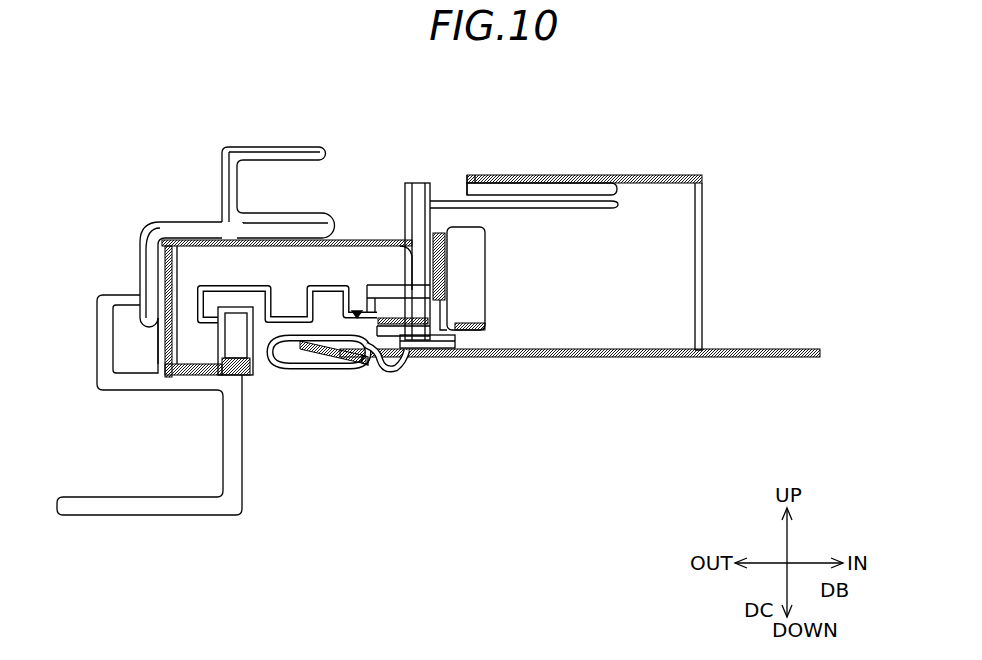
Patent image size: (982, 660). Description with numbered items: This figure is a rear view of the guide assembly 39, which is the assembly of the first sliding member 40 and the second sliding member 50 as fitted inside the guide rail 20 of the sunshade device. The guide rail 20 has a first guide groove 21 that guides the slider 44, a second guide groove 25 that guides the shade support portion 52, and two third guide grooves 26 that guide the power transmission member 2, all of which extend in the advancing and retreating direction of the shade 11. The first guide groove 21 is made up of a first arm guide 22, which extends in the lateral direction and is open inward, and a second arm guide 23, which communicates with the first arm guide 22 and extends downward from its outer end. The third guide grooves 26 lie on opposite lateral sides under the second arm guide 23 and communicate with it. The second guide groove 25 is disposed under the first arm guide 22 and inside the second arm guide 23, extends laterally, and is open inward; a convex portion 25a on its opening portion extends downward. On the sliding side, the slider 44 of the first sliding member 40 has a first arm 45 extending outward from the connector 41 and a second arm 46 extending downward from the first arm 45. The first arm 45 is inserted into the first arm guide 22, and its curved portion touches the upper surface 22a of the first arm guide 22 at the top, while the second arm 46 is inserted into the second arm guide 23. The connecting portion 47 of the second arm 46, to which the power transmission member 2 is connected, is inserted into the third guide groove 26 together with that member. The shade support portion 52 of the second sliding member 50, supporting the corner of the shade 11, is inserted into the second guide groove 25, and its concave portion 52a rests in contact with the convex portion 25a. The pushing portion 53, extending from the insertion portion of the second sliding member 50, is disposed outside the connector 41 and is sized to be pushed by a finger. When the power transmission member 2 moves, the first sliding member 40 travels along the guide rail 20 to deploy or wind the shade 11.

The power transmission member 2 is at (321, 354).
The shade 11 is at (582, 358).
The guide rail 20 is at (236, 120).
The first guide groove 21 is at (203, 171).
The first arm guide 22 is at (203, 253).
The upper surface of the first arm guide 22a is at (273, 247).
The second arm guide 23 is at (165, 270).
The second guide groove 25 is at (305, 347).
The convex portion 25a is at (383, 356).
The third guide groove 26 is at (131, 391).
The guide assembly 39 is at (676, 127).
The first sliding member 40 is at (710, 222).
The connector 41 is at (678, 278).
The slider 44 is at (382, 226).
The first arm 45 is at (359, 257).
The second arm 46 is at (172, 306).
The connecting portion 47 is at (212, 365).
The second sliding member 50 is at (469, 353).
The shade support portion 52 is at (342, 367).
The concave portion 52a is at (355, 363).
The pushing portion 53 is at (473, 254).